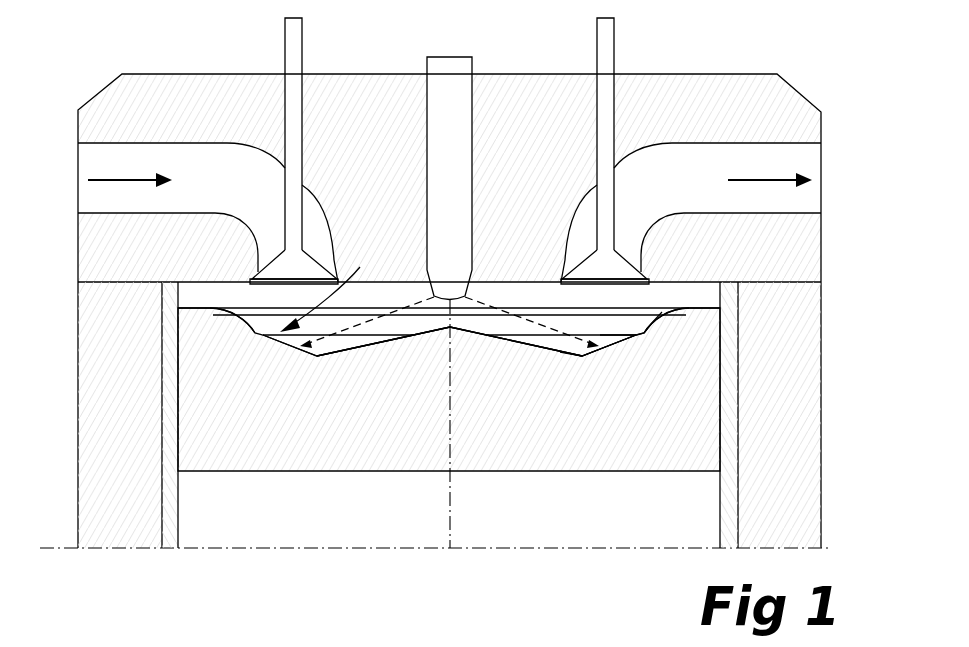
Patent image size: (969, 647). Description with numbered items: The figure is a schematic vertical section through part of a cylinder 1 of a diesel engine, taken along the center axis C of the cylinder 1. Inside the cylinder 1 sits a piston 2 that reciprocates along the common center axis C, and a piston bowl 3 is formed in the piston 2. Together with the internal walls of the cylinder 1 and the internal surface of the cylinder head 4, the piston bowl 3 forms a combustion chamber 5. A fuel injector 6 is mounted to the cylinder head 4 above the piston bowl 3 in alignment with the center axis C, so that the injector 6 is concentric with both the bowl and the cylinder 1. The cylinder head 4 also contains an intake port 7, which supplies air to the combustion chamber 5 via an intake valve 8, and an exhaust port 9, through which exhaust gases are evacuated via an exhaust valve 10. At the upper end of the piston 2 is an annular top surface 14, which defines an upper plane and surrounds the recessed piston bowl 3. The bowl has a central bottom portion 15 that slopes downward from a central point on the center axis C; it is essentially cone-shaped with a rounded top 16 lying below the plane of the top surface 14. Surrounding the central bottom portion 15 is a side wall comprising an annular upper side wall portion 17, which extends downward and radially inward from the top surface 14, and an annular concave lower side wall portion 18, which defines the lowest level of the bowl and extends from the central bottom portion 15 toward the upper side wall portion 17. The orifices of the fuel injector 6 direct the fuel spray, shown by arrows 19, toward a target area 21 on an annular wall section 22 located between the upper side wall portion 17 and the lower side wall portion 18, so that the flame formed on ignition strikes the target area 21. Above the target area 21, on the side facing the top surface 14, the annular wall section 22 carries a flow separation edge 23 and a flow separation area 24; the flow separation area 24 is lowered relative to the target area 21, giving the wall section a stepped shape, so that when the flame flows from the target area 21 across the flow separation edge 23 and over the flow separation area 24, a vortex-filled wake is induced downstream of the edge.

The cylinder 1 is at (725, 508).
The piston 2 is at (592, 452).
The piston bowl 3 is at (320, 358).
The cylinder head 4 is at (382, 90).
The combustion chamber 5 is at (708, 295).
The fuel injector 6 is at (452, 63).
The intake port 7 is at (95, 162).
The intake valve 8 is at (282, 264).
The exhaust port 9 is at (802, 157).
The exhaust valve 10 is at (617, 268).
The annular top surface 14 is at (190, 308).
The central bottom portion 15 is at (488, 332).
The rounded top 16 is at (468, 327).
The upper side wall portion 17 is at (688, 314).
The lower side wall portion 18 is at (570, 350).
The arrows 19 is at (360, 327).
The target area 21 is at (617, 340).
The annular wall section 22 is at (332, 285).
The flow separation edge 23 is at (637, 333).
The flow separation area 24 is at (647, 328).
The center axis C is at (450, 487).